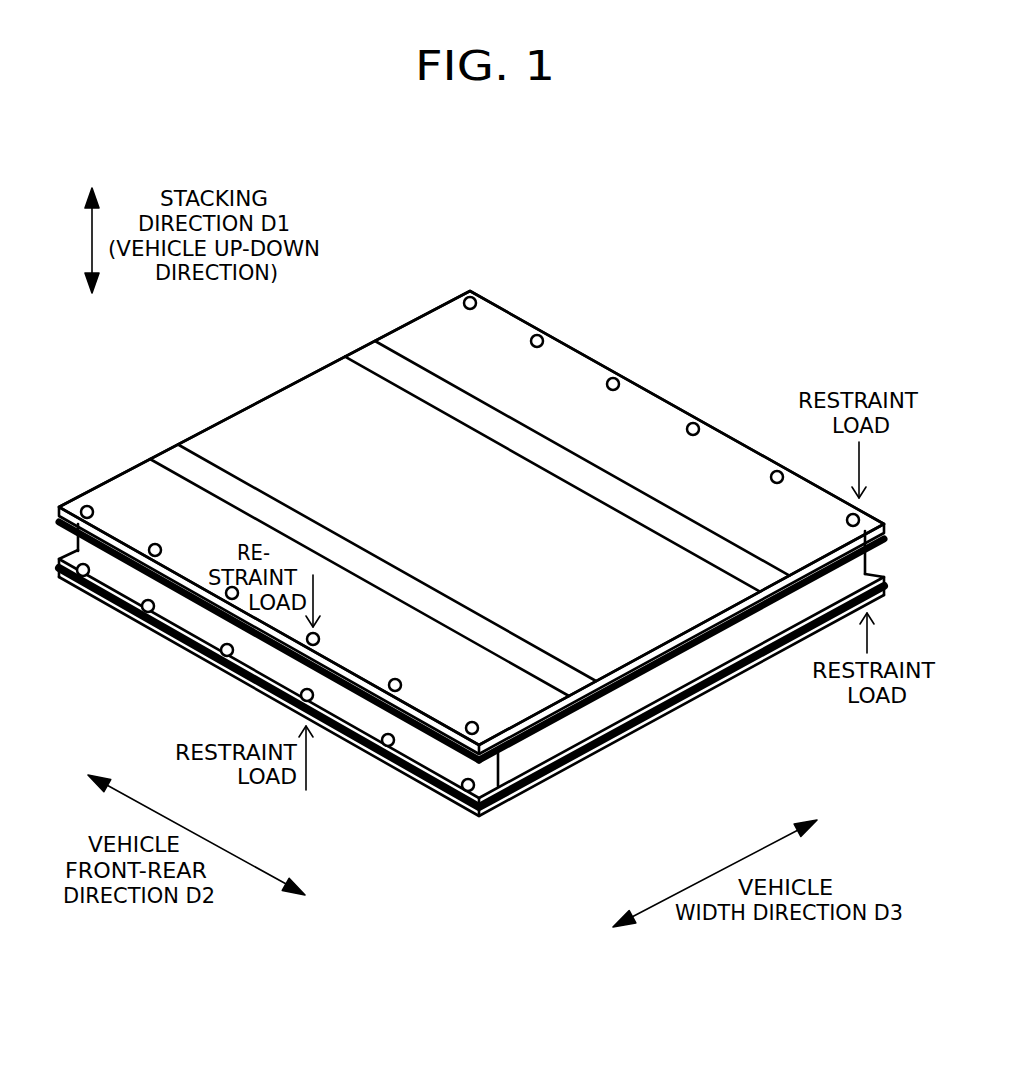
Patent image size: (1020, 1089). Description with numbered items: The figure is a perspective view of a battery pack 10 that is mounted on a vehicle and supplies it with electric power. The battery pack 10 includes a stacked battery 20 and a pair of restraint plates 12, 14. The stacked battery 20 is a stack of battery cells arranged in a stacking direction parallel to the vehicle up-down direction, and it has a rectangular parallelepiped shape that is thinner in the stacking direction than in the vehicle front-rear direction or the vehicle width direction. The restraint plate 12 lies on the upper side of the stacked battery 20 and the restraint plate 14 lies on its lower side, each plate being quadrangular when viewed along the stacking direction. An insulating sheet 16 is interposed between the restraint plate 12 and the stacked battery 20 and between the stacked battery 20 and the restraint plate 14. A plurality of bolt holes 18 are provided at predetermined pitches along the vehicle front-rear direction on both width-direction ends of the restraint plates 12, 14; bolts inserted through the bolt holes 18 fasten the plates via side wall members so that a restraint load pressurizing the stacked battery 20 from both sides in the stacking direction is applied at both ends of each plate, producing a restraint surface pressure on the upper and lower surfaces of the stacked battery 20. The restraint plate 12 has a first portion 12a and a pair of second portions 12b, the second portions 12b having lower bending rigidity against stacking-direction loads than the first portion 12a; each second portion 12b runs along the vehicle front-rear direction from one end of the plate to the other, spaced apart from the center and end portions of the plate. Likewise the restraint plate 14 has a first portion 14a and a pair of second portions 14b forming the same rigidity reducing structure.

The battery pack 10 is at (657, 228).
The restraint plate 12 is at (201, 396).
The first portion 12a is at (312, 413).
The second portions 12b is at (382, 363).
The restraint plate 14 is at (776, 753).
The first portion 14a is at (660, 716).
The second portions 14b is at (778, 648).
The insulating sheet 16 is at (510, 750).
The bolt holes 18 is at (50, 610).
The stacked battery 20 is at (463, 751).